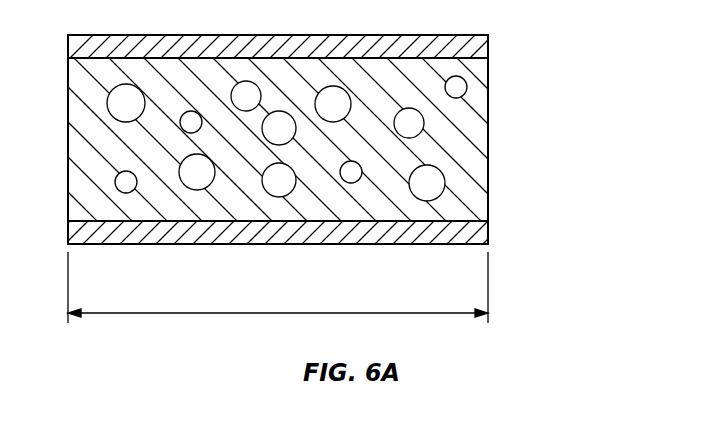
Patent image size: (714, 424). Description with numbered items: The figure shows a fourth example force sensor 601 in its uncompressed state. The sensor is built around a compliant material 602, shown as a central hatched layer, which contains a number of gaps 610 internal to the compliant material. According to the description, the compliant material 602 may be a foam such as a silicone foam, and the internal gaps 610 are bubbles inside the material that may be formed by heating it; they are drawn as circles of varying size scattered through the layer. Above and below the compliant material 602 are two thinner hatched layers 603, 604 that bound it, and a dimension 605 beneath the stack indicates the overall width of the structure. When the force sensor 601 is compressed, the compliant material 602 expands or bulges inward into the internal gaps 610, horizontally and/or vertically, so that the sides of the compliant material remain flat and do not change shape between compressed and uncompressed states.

The force sensor 601 is at (558, 102).
The compliant material 602 is at (488, 143).
The top layer 603 is at (488, 50).
The bottom layer 604 is at (488, 232).
The width dimension 605 is at (280, 312).
The gaps 610 is at (445, 183).